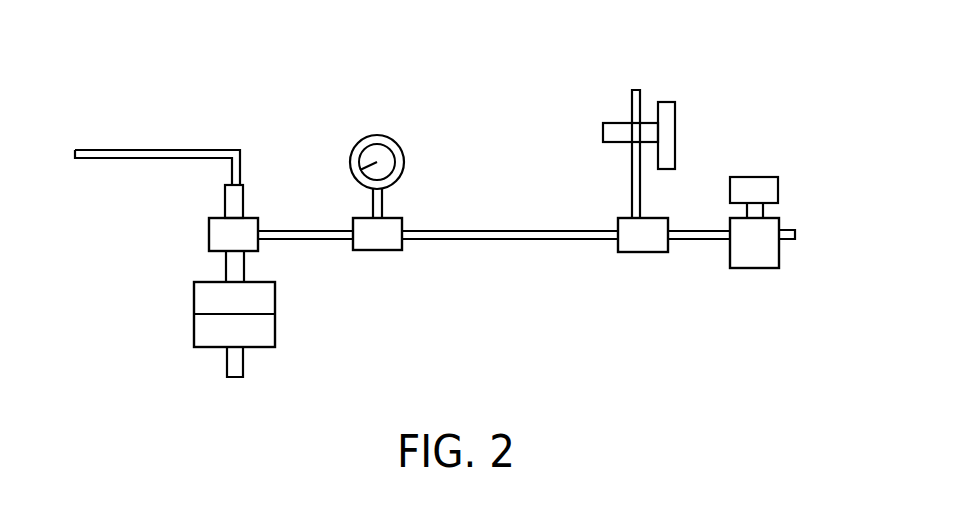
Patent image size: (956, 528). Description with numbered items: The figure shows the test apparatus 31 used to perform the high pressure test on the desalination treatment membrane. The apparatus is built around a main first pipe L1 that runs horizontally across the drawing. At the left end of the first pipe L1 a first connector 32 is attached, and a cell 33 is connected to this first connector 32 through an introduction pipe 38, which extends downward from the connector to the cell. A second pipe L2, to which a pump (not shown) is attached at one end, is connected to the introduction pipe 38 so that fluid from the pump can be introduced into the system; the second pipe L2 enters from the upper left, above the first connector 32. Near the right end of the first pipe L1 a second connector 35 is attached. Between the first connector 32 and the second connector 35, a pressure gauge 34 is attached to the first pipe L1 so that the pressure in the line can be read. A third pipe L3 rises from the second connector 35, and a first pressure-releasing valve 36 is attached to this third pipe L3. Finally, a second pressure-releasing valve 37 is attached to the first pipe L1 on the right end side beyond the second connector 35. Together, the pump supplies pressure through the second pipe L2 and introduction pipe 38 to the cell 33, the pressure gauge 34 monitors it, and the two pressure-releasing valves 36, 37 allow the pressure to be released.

The test apparatus 31 is at (561, 52).
The first connector 32 is at (209, 233).
The cell 33 is at (194, 330).
The pressure gauge 34 is at (373, 251).
The second connector 35 is at (643, 252).
The first pressure-releasing valve 36 is at (603, 132).
The second pressure-releasing valve 37 is at (787, 219).
The introduction pipe 38 is at (238, 267).
The first pipe L1 is at (480, 230).
The second pipe L2 is at (233, 148).
The third pipe L3 is at (641, 190).